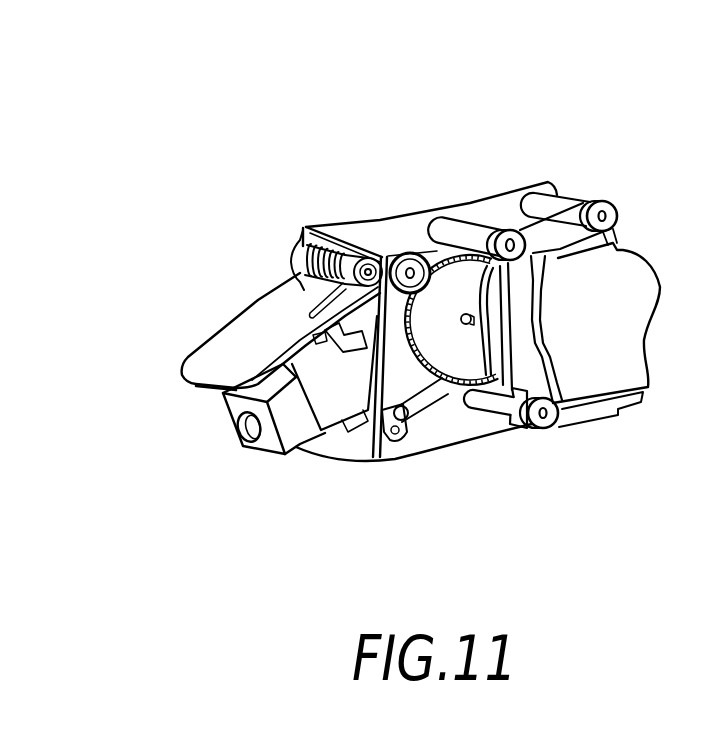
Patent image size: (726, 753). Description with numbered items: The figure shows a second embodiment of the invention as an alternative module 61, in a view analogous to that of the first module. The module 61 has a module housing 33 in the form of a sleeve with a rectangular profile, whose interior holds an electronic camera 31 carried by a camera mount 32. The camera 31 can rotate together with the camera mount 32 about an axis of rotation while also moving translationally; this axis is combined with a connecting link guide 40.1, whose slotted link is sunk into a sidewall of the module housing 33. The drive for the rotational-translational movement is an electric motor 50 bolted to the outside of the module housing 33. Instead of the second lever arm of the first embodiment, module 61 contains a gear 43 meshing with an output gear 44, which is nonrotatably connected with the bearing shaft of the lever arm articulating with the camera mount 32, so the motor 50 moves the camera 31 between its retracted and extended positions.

The electronic camera 31 is at (293, 425).
The camera mount 32 is at (337, 402).
The module housing 33 is at (427, 219).
The connecting link guide 40.1 is at (434, 408).
The gear 43 is at (473, 355).
The output gear 44 is at (408, 257).
The electric motor 50 is at (628, 292).
The alternative module 61 is at (628, 183).